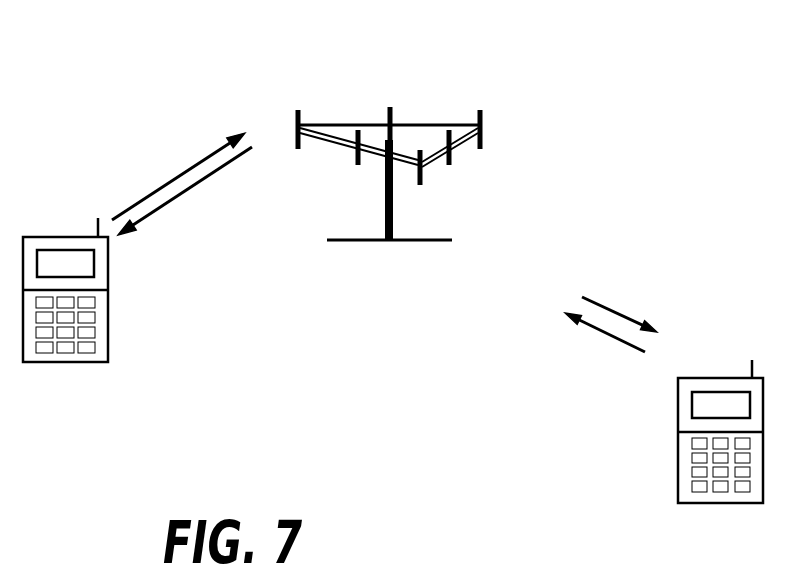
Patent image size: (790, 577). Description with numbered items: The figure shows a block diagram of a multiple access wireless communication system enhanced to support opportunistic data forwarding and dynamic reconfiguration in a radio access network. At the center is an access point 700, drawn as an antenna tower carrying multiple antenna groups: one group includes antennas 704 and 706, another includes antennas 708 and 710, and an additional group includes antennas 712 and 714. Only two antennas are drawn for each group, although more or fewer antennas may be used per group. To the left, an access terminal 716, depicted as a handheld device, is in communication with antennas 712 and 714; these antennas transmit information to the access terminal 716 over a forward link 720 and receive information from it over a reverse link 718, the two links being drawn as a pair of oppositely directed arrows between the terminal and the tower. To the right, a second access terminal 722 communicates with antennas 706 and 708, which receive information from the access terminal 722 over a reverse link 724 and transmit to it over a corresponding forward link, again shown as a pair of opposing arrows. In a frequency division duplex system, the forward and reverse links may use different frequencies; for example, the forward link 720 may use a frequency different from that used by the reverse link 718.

The access point 700 is at (373, 240).
The antenna 704 is at (423, 181).
The antenna 706 is at (453, 163).
The antenna 708 is at (487, 137).
The antenna 710 is at (392, 108).
The antenna 712 is at (302, 115).
The antenna 714 is at (358, 166).
The access terminal 716 is at (82, 237).
The reverse link 718 is at (175, 175).
The forward link 720 is at (190, 192).
The access terminal 722 is at (702, 378).
The reverse link 724 is at (605, 353).